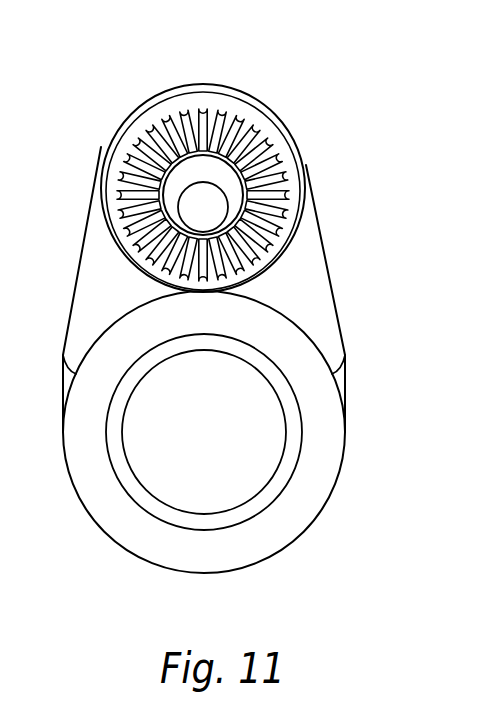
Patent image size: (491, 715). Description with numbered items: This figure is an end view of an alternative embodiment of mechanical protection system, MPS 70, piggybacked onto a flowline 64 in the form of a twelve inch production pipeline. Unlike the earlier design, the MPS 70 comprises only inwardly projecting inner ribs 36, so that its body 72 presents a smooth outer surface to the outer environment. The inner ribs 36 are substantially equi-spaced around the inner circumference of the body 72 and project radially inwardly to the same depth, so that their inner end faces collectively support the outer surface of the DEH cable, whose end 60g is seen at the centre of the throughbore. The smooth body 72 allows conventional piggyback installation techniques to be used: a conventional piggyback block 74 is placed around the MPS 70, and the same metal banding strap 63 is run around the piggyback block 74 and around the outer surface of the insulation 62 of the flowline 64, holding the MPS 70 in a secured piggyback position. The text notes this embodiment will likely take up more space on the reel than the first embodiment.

The MPS 70 is at (245, 110).
The body 72 is at (147, 124).
The inner ribs 36 is at (110, 201).
The motor shaft end 60g is at (200, 197).
The piggyback block 74 is at (312, 263).
The metal banding strap 63 is at (348, 372).
The insulation 62 is at (330, 444).
The flowline 64 is at (263, 498).